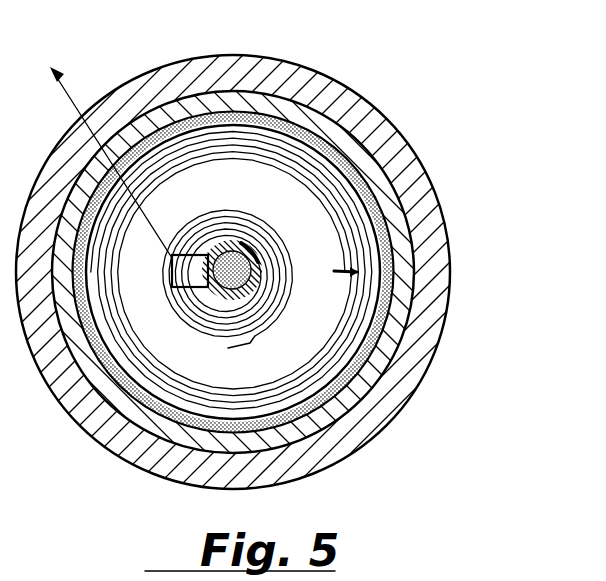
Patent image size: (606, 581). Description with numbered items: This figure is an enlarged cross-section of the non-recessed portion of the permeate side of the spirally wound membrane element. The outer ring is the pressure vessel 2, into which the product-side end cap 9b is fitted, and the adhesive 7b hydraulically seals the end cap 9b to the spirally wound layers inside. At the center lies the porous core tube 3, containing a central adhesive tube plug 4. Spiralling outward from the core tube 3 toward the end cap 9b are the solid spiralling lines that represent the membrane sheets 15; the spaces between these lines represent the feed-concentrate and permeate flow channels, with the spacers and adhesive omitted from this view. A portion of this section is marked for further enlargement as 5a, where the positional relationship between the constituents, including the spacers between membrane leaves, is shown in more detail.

The pressure vessel 2 is at (393, 153).
The adhesive 7b is at (408, 286).
The product-side end cap 9b is at (388, 224).
The membrane sheets 15 is at (303, 160).
The central adhesive tube plug 4 is at (229, 302).
The porous core tube 3 is at (252, 283).
The enlarged portion 5a is at (101, 144).